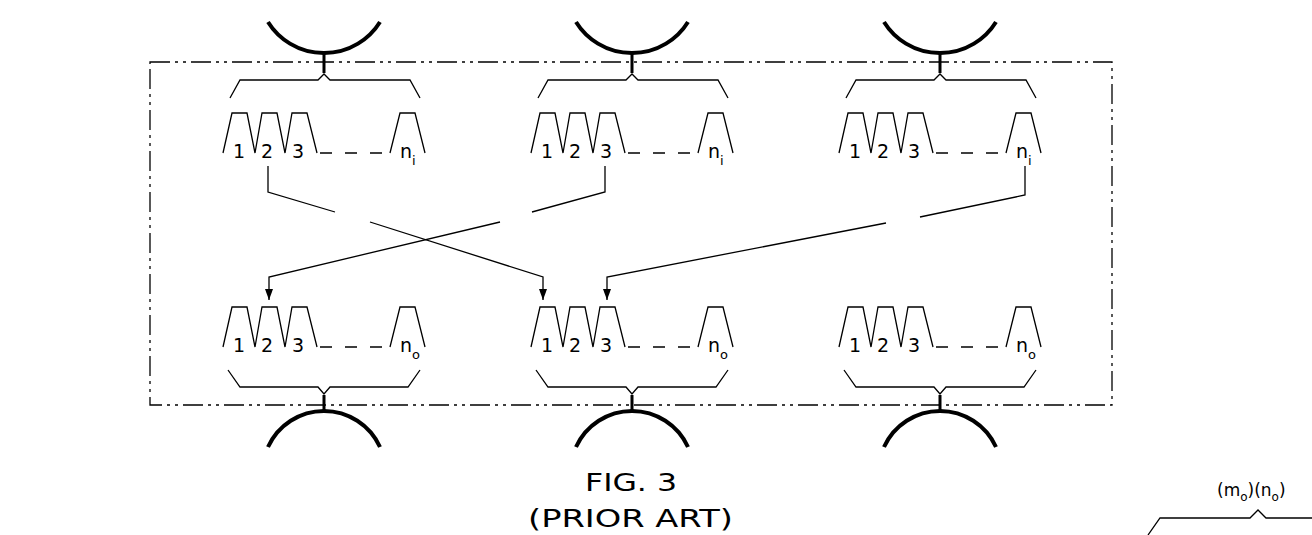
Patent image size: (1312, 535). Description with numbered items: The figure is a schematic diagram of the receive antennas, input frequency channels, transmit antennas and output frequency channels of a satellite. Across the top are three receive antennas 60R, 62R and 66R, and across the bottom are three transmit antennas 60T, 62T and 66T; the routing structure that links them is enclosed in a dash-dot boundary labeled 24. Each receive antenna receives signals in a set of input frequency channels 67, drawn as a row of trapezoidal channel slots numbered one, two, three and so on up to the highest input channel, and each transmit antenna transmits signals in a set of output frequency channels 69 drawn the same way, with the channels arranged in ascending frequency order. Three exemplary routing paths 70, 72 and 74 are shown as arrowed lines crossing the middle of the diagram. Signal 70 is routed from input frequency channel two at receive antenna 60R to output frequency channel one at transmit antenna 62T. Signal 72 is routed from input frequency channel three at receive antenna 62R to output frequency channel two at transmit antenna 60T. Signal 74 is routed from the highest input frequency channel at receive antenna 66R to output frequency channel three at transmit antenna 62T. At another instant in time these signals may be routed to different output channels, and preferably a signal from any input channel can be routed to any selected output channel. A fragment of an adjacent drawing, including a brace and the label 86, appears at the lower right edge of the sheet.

The switching matrix 24 is at (1114, 143).
The receive antenna 60R is at (270, 37).
The receive antenna 62R is at (578, 37).
The receive antenna 66R is at (886, 37).
The transmit antenna 60T is at (272, 434).
The transmit antenna 62T is at (580, 434).
The transmit antenna 66T is at (888, 434).
The input frequency channels 67 is at (419, 124).
The output frequency channels 69 is at (419, 318).
The routing path 70 is at (405, 233).
The routing path 72 is at (437, 233).
The routing path 74 is at (816, 233).
The adjacent figure element 86 is at (1062, 532).